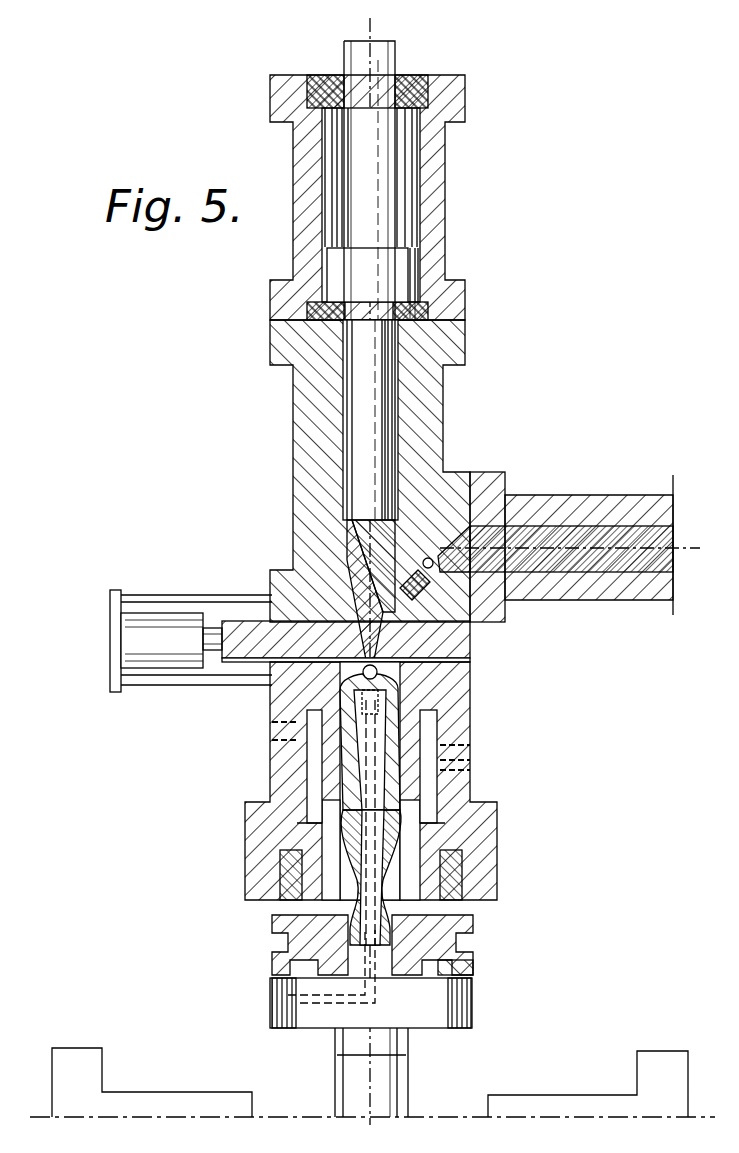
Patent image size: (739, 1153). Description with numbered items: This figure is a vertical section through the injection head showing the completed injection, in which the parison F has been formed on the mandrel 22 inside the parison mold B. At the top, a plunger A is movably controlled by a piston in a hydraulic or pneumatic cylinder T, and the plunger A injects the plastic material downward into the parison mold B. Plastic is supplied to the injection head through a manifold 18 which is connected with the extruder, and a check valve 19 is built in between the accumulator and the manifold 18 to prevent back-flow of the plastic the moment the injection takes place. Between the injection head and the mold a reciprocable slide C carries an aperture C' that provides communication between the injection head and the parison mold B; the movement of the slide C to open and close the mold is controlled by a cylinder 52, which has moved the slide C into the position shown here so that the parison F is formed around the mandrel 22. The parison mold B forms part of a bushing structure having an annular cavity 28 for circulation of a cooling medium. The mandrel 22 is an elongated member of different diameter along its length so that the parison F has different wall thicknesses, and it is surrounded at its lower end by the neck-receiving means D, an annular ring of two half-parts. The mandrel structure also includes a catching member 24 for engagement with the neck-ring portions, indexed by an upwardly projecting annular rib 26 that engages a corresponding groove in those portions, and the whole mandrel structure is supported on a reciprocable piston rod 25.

The cylinder T is at (433, 207).
The plunger A is at (403, 432).
The check valve 19 is at (428, 556).
The manifold 18 is at (572, 499).
The aperture C' is at (370, 642).
The slide C is at (362, 642).
The cylinder 52 is at (170, 678).
The parison F is at (399, 700).
The annular cavity 28 is at (432, 748).
The mandrel 22 is at (383, 802).
The parison mold B is at (320, 793).
The neck-receiving means D is at (460, 925).
The annular rib 26 is at (445, 968).
The catching member 24 is at (473, 1005).
The piston rod 25 is at (410, 1082).